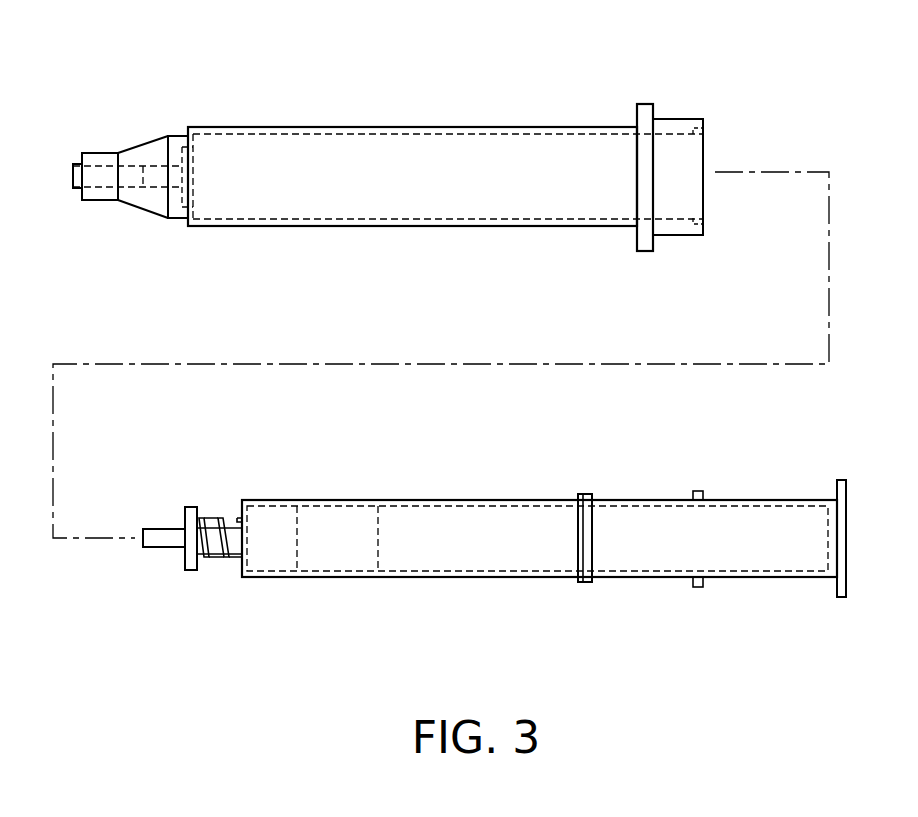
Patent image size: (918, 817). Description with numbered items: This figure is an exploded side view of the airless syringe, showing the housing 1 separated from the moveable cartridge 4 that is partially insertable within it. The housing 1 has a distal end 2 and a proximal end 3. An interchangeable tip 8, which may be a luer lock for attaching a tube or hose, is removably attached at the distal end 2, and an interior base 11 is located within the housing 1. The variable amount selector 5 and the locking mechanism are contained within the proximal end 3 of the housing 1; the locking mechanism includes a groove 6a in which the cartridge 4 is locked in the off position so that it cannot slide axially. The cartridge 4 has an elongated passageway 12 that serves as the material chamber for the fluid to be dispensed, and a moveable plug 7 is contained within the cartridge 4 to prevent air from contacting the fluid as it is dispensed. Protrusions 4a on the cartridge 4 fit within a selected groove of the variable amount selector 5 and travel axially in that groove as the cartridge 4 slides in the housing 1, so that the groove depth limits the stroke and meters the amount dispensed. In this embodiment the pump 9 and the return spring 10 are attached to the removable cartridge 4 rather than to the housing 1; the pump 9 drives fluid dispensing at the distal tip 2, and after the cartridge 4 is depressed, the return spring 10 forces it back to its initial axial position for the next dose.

The housing 1 is at (437, 127).
The distal end 2 is at (148, 136).
The proximal end 3 is at (645, 104).
The moveable cartridge 4 is at (760, 577).
The protrusion 4a is at (700, 491).
The variable amount selector 5 is at (683, 119).
The groove 6a is at (703, 133).
The moveable plug 7 is at (348, 523).
The interchangeable tip 8 is at (76, 188).
The pump 9 is at (233, 518).
The return spring 10 is at (210, 558).
The interior base 11 is at (200, 136).
The elongated passageway 12 is at (490, 530).